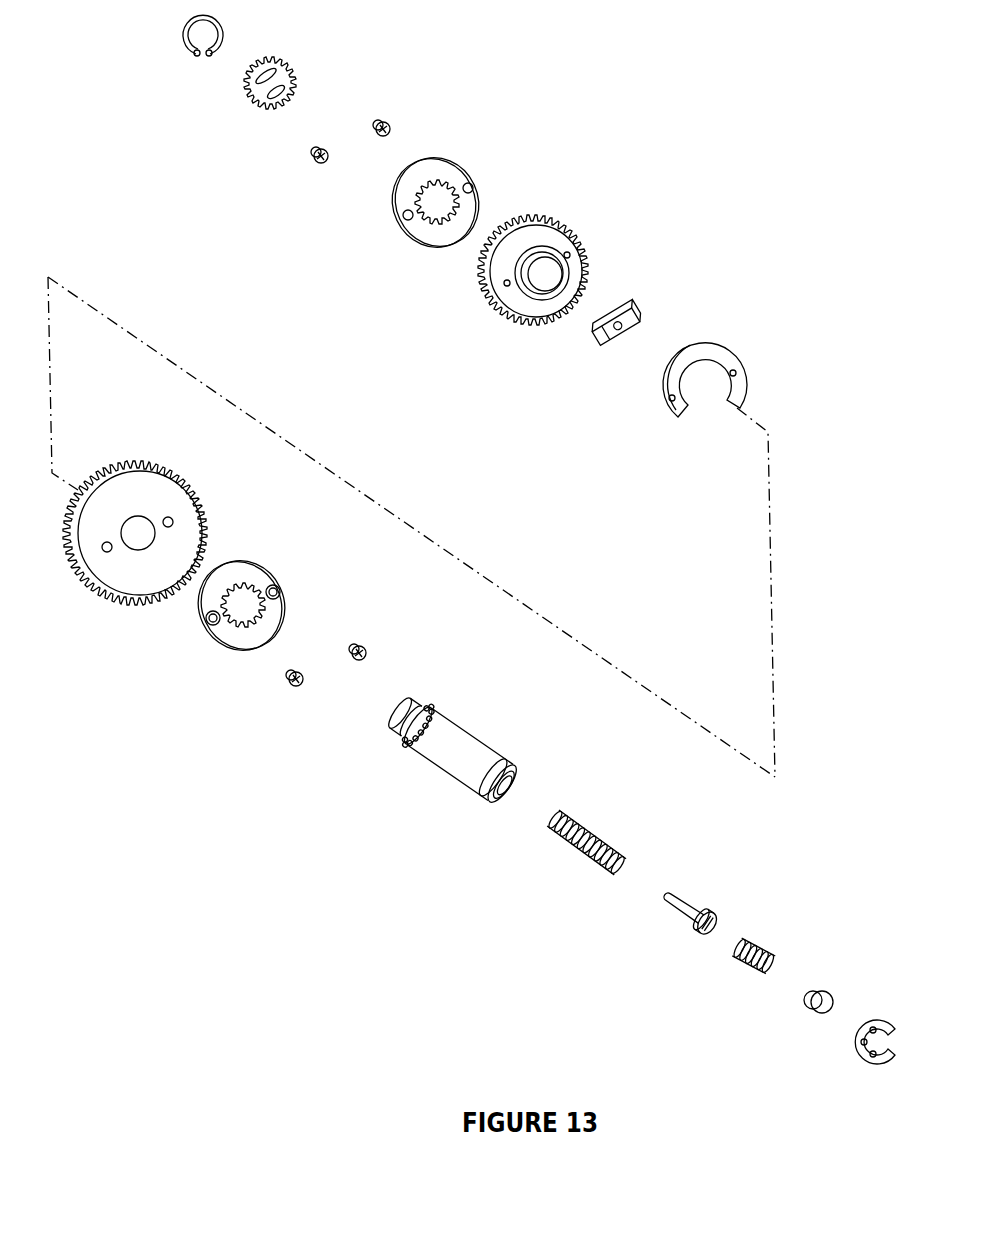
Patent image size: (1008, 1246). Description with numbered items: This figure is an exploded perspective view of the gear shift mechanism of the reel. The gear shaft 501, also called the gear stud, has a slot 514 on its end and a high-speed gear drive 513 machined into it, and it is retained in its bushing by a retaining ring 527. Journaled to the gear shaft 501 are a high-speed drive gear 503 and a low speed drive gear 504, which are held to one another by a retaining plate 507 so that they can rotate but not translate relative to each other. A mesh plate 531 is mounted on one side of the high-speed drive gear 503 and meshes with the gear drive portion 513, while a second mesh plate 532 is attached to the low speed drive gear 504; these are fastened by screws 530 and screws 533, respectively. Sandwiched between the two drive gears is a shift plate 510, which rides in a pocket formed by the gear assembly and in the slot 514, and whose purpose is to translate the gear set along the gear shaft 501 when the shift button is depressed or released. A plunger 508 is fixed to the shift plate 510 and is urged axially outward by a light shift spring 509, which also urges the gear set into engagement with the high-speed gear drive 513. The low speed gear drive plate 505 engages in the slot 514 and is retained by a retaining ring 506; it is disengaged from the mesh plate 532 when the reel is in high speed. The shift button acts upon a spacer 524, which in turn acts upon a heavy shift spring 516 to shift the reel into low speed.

The gear shaft 501 is at (462, 763).
The high-speed drive gear 503 is at (203, 527).
The low speed drive gear 504 is at (482, 293).
The low speed gear drive plate 505 is at (245, 97).
The retaining ring 506 is at (183, 47).
The retaining plate 507 is at (662, 410).
The plunger 508 is at (682, 922).
The light shift spring 509 is at (580, 853).
The shift plate 510 is at (593, 333).
The high-speed gear drive 513 is at (413, 745).
The slot 514 is at (395, 720).
The heavy shift spring 516 is at (742, 958).
The spacer 524 is at (813, 1013).
The retaining ring 527 is at (858, 1063).
The screws 530 is at (355, 658).
The mesh plate 531 is at (207, 622).
The mesh plate 532 is at (395, 218).
The screws 533 is at (379, 137).